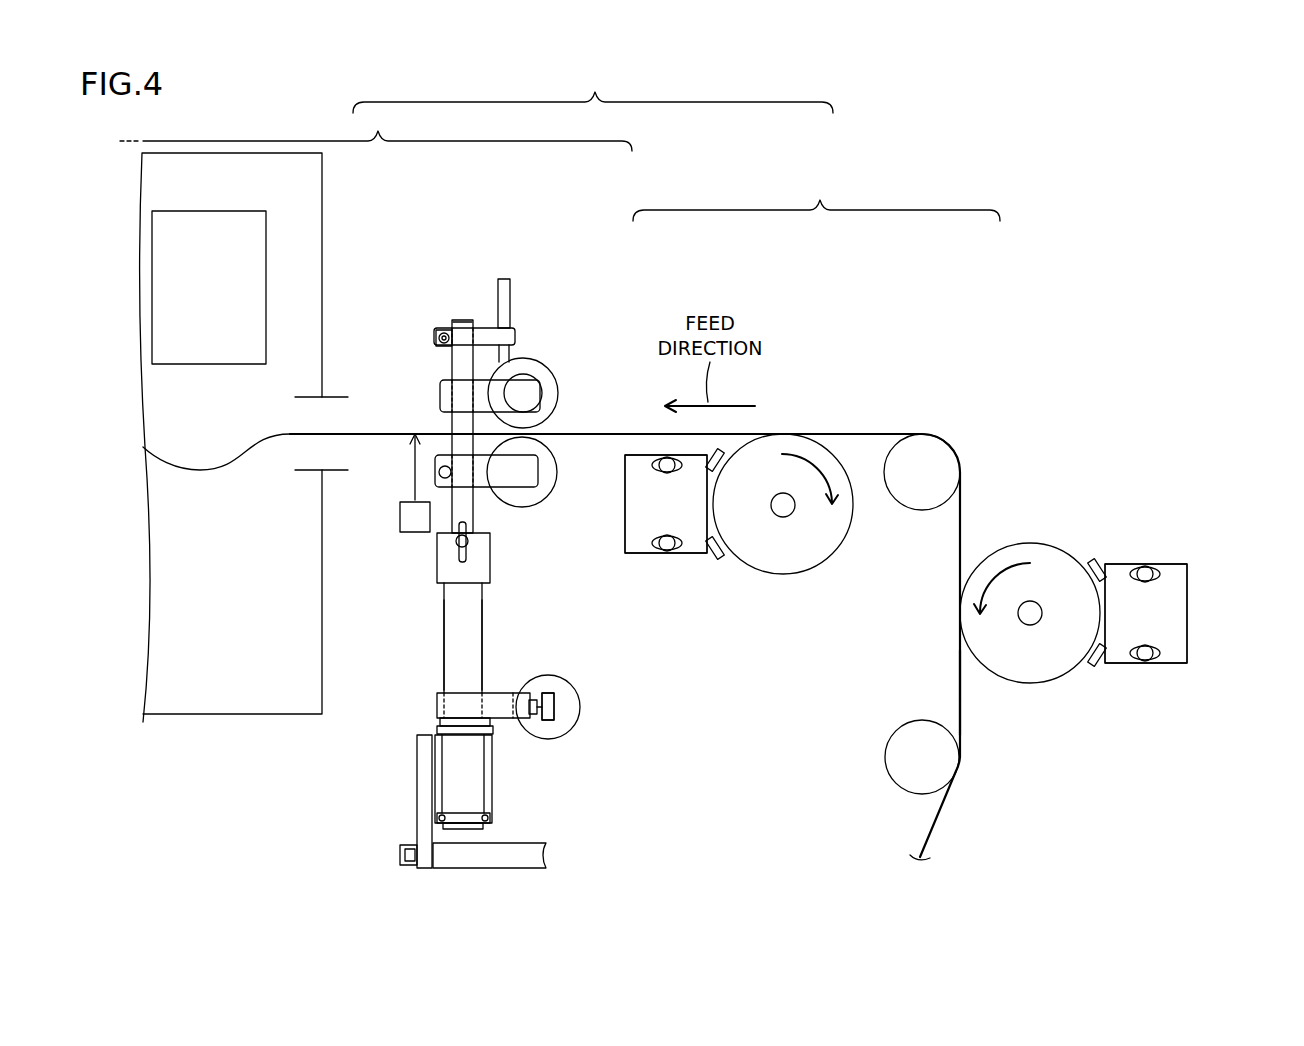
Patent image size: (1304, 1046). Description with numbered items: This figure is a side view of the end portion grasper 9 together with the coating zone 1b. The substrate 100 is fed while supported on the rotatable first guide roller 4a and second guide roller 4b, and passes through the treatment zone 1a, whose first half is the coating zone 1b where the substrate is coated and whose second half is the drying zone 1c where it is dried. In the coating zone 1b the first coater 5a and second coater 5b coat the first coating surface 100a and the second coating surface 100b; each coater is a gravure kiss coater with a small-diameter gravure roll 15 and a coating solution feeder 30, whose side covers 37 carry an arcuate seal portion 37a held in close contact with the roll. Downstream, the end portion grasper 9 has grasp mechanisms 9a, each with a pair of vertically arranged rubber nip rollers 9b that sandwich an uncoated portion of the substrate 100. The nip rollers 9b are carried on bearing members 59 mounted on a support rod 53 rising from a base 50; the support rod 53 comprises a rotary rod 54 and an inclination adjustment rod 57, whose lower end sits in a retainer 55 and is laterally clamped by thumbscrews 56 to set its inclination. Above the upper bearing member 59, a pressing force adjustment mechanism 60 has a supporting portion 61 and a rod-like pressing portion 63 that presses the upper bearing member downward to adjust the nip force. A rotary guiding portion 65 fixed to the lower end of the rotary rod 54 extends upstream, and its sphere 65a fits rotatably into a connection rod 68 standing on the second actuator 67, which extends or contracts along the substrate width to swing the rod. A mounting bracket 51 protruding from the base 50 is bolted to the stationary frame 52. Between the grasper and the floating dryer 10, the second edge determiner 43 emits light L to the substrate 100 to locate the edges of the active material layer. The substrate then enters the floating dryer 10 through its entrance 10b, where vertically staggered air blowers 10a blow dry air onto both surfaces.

The treatment zone 1a is at (593, 89).
The coating zone 1b is at (816, 197).
The drying zone 1c is at (376, 129).
The floating dryer 10 is at (323, 228).
The air blower 10a is at (197, 355).
The entrance 10b is at (339, 411).
The end portion grasper 9 is at (436, 297).
The grasp mechanism 9a is at (536, 361).
The nip roller 9b is at (565, 383).
The inclination adjustment rod 57 is at (460, 365).
The pressing force adjustment mechanism 60 is at (507, 279).
The supporting portion 61 is at (487, 337).
The pressing portion 63 is at (506, 293).
The bearing member 59 is at (525, 398).
The light L is at (413, 470).
The second edge determiner 43 is at (399, 518).
The thumbscrew 56 is at (452, 540).
The retainer 55 is at (478, 566).
The support rod 53 is at (443, 625).
The rotary rod 54 is at (483, 630).
The rotary guiding portion 65 is at (455, 705).
The second actuator 67 is at (567, 682).
The sphere 65a is at (560, 708).
The connection rod 68 is at (562, 716).
The base 50 is at (472, 773).
The mounting bracket 51 is at (423, 797).
The stationary frame 52 is at (525, 853).
The side cover 37 is at (626, 505).
The seal portion 37a is at (713, 505).
The coating solution feeder 30 is at (625, 553).
The first coater 5a is at (1123, 563).
The second coater 5b is at (687, 556).
The small-diameter gravure roll 15 is at (805, 560).
The first guide roller 4a is at (893, 752).
The second guide roller 4b is at (918, 492).
The substrate 100 is at (945, 803).
The first coating surface 100a is at (962, 718).
The second coating surface 100b is at (958, 676).